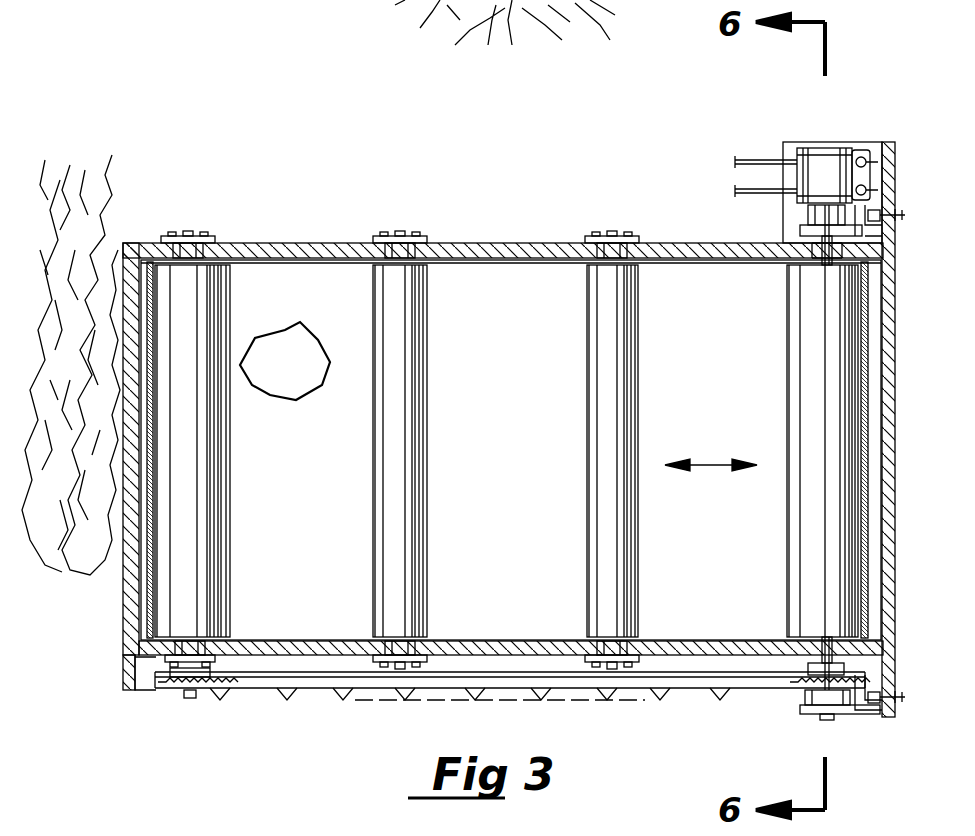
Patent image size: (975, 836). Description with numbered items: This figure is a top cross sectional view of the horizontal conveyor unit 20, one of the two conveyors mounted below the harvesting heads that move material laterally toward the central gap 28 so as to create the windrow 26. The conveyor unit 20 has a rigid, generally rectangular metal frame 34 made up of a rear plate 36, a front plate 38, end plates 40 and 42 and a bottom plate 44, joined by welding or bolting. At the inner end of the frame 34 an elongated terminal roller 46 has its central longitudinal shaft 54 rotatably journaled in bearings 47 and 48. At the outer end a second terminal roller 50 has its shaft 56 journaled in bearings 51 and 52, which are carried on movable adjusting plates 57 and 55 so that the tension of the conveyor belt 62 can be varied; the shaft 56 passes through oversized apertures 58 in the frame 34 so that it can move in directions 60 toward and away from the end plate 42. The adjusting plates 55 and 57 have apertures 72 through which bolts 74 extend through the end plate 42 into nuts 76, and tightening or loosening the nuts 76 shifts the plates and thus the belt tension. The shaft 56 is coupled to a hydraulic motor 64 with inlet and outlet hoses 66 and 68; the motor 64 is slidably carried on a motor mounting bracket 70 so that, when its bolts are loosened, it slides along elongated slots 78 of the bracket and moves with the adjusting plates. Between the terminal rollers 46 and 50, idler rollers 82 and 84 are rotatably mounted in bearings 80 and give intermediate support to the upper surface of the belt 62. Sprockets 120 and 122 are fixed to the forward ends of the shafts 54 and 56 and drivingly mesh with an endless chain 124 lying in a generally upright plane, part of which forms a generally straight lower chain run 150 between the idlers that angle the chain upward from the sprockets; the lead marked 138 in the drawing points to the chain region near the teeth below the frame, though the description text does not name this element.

The horizontal conveyor unit 20 is at (612, 188).
The windrow 26 is at (96, 574).
The central gap 28 is at (72, 648).
The frame 34 is at (123, 246).
The rear plate 36 is at (462, 243).
The front plate 38 is at (690, 648).
The end plate 40 is at (123, 356).
The end plate 42 is at (895, 436).
The bottom plate 44 is at (308, 376).
The terminal roller 46 is at (230, 472).
The bearing 47 is at (210, 250).
The bearing 48 is at (210, 650).
The second terminal roller 50 is at (787, 396).
The bearing 51 is at (808, 216).
The bearing 52 is at (812, 706).
The central longitudinal shaft 54 is at (190, 236).
The adjusting plate 55 is at (845, 715).
The shaft 56 is at (825, 258).
The adjusting plate 57 is at (800, 232).
The oversized apertures 58 is at (818, 262).
The directions 60 is at (708, 470).
The conveyor belt 62 is at (150, 330).
The hydraulic motor 64 is at (822, 150).
The inlet hose 66 is at (735, 164).
The outlet hose 68 is at (735, 192).
The motor mounting bracket 70 is at (790, 145).
The apertures 72 is at (862, 712).
The bolts 74 is at (868, 225).
The nuts 76 is at (905, 214).
The elongated slots 78 is at (880, 192).
The bearings 80 is at (386, 250).
The idler roller 82 is at (427, 396).
The idler roller 84 is at (587, 352).
The sprocket 120 is at (215, 690).
The sprocket 122 is at (800, 690).
The endless chain 124 is at (292, 702).
The tooth spacing 138 is at (292, 704).
The lower chain run 150 is at (690, 702).